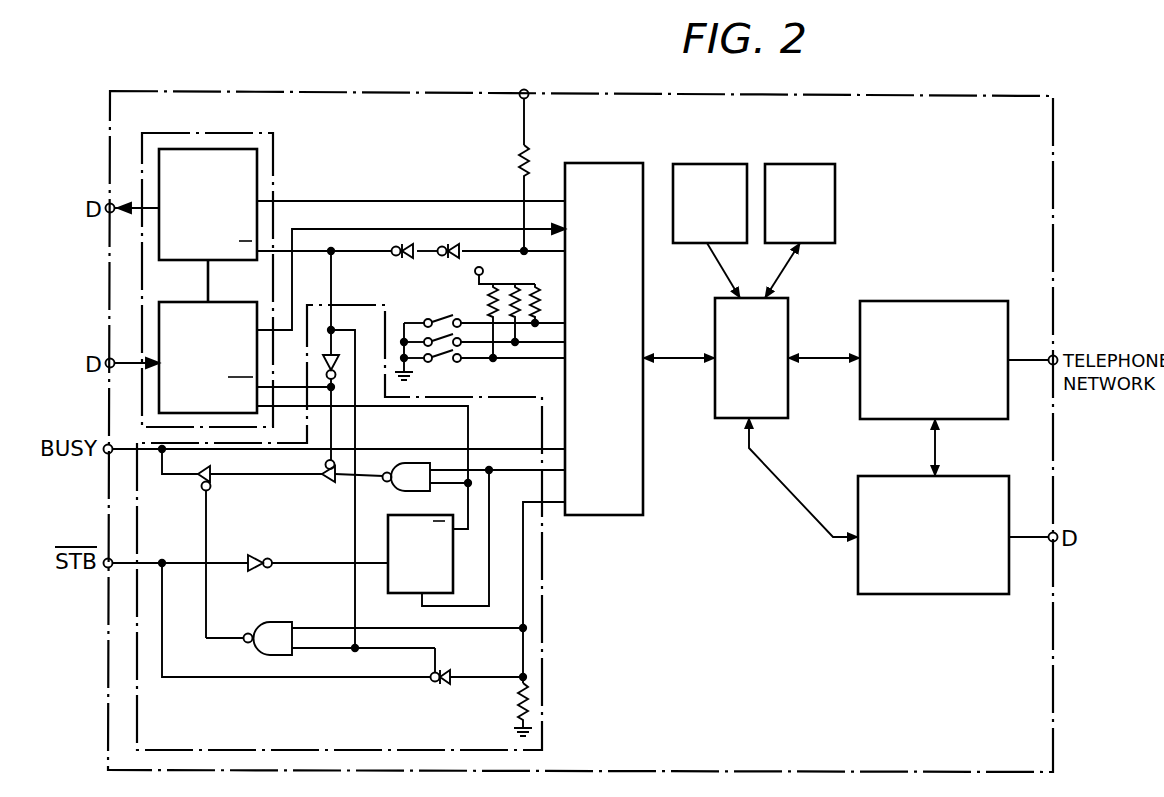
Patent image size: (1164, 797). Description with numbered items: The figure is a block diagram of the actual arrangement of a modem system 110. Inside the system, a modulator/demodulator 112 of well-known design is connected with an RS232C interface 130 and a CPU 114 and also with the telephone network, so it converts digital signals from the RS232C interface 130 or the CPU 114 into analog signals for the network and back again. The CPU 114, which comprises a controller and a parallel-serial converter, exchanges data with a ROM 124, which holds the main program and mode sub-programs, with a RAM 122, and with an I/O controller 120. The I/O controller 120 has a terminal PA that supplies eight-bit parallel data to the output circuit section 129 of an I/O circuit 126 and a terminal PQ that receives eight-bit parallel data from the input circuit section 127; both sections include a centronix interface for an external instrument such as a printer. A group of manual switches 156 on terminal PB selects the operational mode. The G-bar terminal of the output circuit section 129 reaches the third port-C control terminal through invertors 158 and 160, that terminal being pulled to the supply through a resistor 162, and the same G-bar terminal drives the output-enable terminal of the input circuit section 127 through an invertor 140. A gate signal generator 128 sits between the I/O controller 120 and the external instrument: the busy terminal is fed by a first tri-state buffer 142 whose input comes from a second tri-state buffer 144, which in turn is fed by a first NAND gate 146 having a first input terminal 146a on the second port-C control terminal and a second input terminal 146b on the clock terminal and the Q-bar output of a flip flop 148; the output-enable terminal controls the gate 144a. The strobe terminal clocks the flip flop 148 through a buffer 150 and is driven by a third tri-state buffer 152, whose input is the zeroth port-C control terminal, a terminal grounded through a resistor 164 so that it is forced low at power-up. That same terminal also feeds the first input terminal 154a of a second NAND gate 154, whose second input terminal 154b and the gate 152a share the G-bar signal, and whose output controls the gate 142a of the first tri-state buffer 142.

The modem system 110 is at (1055, 152).
The modulator/demodulator 112 is at (915, 301).
The CPU 114 is at (788, 420).
The I/O controller 120 is at (605, 516).
The RAM 122 is at (798, 164).
The ROM 124 is at (707, 164).
The I/O circuit 126 is at (238, 133).
The input circuit section 127 is at (219, 302).
The gate signal generator 128 is at (545, 732).
The output circuit section 129 is at (257, 162).
The RS232C interface 130 is at (924, 595).
The invertor 140 is at (322, 367).
The first tri-state buffer 142 is at (212, 480).
The gate of first tri-state buffer 142a is at (202, 487).
The second tri-state buffer 144 is at (326, 486).
The gate of second tri-state buffer 144a is at (325, 464).
The first NAND gate 146 is at (395, 493).
The first input terminal of first NAND gate 146a is at (445, 462).
The second input terminal of first NAND gate 146b is at (445, 486).
The flip flop 148 is at (410, 594).
The buffer 150 is at (254, 573).
The third tri-state buffer 152 is at (434, 688).
The gate of third tri-state buffer 152a is at (440, 656).
The second NAND gate 154 is at (252, 654).
The first input terminal of second NAND gate 154a is at (320, 628).
The second input terminal of second NAND gate 154b is at (320, 650).
The group of manual switches 156 is at (420, 316).
The invertor 158 is at (395, 257).
The invertor 160 is at (448, 258).
The resistor 162 is at (516, 165).
The resistor 164 is at (519, 695).